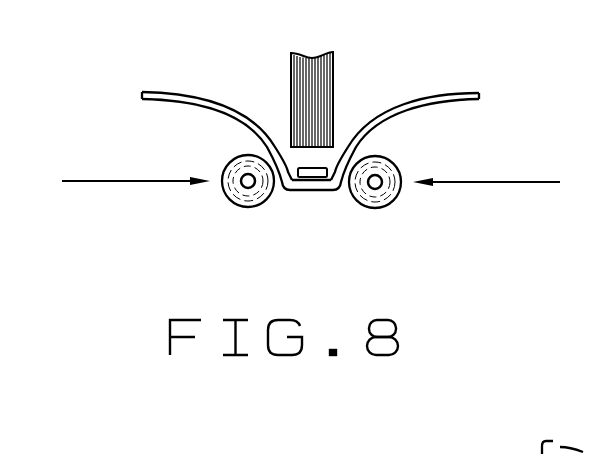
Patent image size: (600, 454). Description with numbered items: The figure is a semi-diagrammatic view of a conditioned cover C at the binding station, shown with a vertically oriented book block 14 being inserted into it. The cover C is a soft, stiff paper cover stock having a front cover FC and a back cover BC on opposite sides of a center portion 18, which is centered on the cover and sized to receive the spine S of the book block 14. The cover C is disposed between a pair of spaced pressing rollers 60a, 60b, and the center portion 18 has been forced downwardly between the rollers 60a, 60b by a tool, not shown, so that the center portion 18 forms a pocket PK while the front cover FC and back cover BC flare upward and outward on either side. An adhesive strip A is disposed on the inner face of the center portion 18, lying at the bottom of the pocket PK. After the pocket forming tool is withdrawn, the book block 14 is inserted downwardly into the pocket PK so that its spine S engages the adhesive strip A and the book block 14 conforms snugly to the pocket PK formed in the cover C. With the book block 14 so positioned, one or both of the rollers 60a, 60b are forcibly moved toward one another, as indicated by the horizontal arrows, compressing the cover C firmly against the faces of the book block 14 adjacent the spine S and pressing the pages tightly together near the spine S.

The book block 14 is at (279, 82).
The book cover blank C is at (304, 145).
The front cover FC is at (169, 99).
The back cover BC is at (455, 100).
The spine S is at (317, 148).
The center portion 18 is at (291, 191).
The adhesive strip A is at (309, 178).
The pocket PK is at (342, 209).
The pressing roller 60a is at (231, 196).
The pressing roller 60b is at (396, 197).